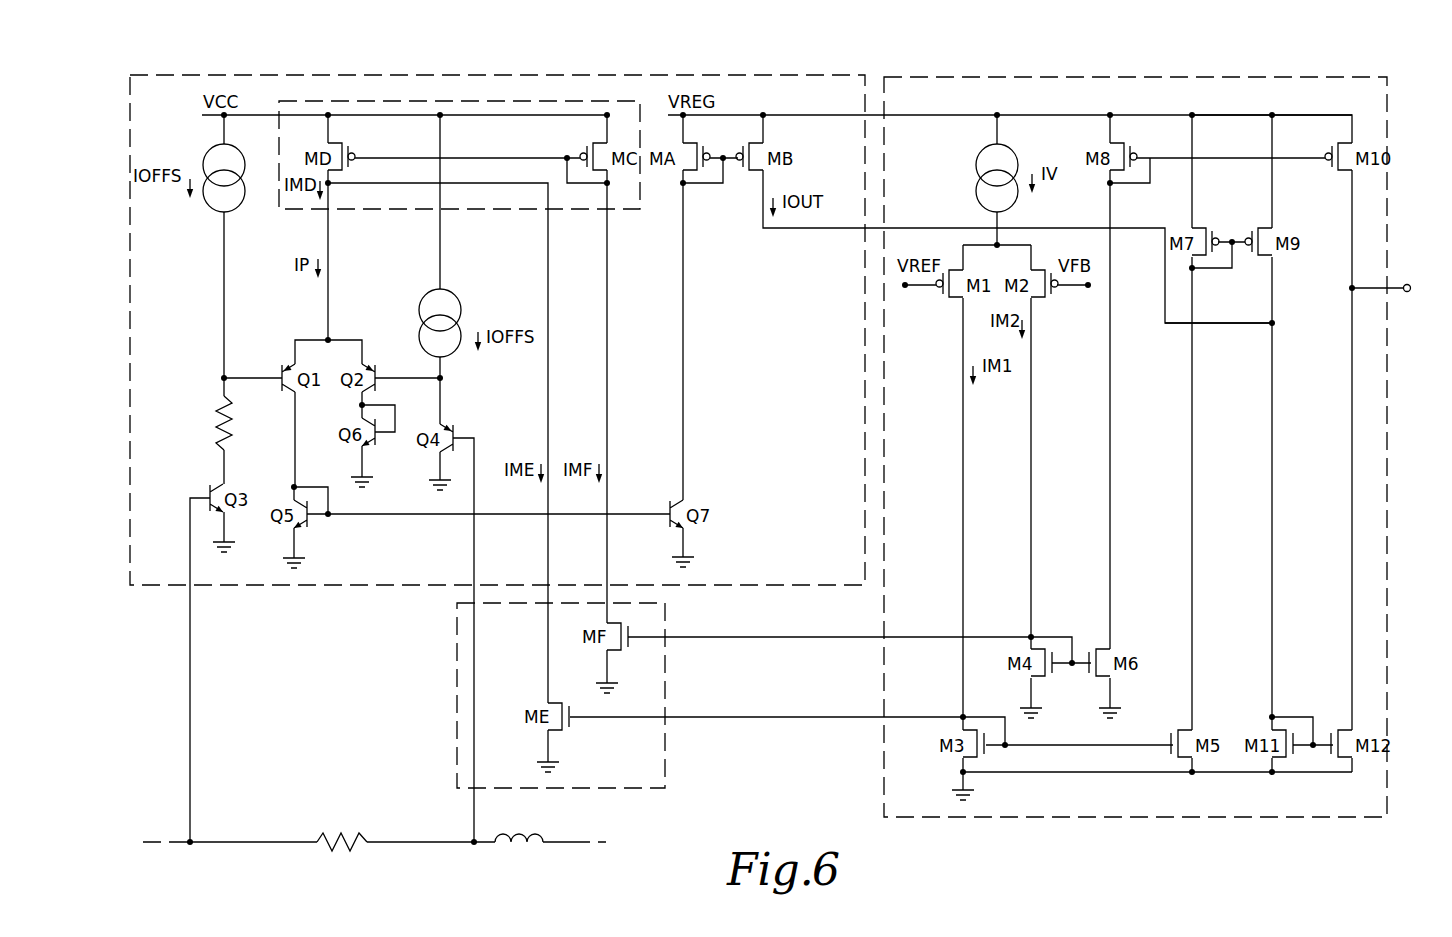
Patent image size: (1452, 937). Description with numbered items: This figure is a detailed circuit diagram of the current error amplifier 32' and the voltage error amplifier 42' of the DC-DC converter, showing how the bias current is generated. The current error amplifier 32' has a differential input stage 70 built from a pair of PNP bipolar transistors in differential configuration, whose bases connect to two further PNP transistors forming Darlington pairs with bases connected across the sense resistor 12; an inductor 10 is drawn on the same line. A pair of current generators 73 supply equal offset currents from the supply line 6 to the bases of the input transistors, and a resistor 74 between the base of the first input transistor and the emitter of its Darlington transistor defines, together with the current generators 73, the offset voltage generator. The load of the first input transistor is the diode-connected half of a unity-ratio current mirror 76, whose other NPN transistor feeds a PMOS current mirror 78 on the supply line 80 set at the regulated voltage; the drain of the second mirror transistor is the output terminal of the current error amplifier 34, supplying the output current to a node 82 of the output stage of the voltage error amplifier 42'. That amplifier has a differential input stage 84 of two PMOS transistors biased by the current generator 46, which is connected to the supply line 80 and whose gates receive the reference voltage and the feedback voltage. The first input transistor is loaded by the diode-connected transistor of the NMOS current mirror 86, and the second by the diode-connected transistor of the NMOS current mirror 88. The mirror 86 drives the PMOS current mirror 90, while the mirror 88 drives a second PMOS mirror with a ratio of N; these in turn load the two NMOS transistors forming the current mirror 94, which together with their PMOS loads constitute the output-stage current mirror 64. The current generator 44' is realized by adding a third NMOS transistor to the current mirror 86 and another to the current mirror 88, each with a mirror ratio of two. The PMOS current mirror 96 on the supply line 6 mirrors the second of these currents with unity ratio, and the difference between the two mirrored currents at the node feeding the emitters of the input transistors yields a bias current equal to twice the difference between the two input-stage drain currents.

The current error amplifier 32' is at (497, 301).
The supply line 6 is at (328, 113).
The current mirror 96 is at (487, 140).
The current generator 44' is at (472, 413).
The supply line 80 is at (763, 112).
The current mirror 78 is at (732, 192).
The voltage error amplifier 42' is at (1135, 418).
The current mirror 64 is at (1313, 98).
The current generators 73 is at (215, 150).
The resistor 74 is at (217, 410).
The current mirror 76 is at (329, 530).
The differential input stage 70 is at (468, 420).
The current generator 46 is at (988, 148).
The node 82 is at (1323, 170).
The output terminal of the current error amplifier 34 is at (1407, 283).
The current mirror 90 is at (1240, 262).
The differential input stage 84 is at (953, 334).
The current mirror 88 is at (1070, 680).
The current mirror 86 is at (1105, 752).
The current mirror 94 is at (1322, 726).
The inductor 10 is at (522, 835).
The sense resistor 12 is at (355, 851).